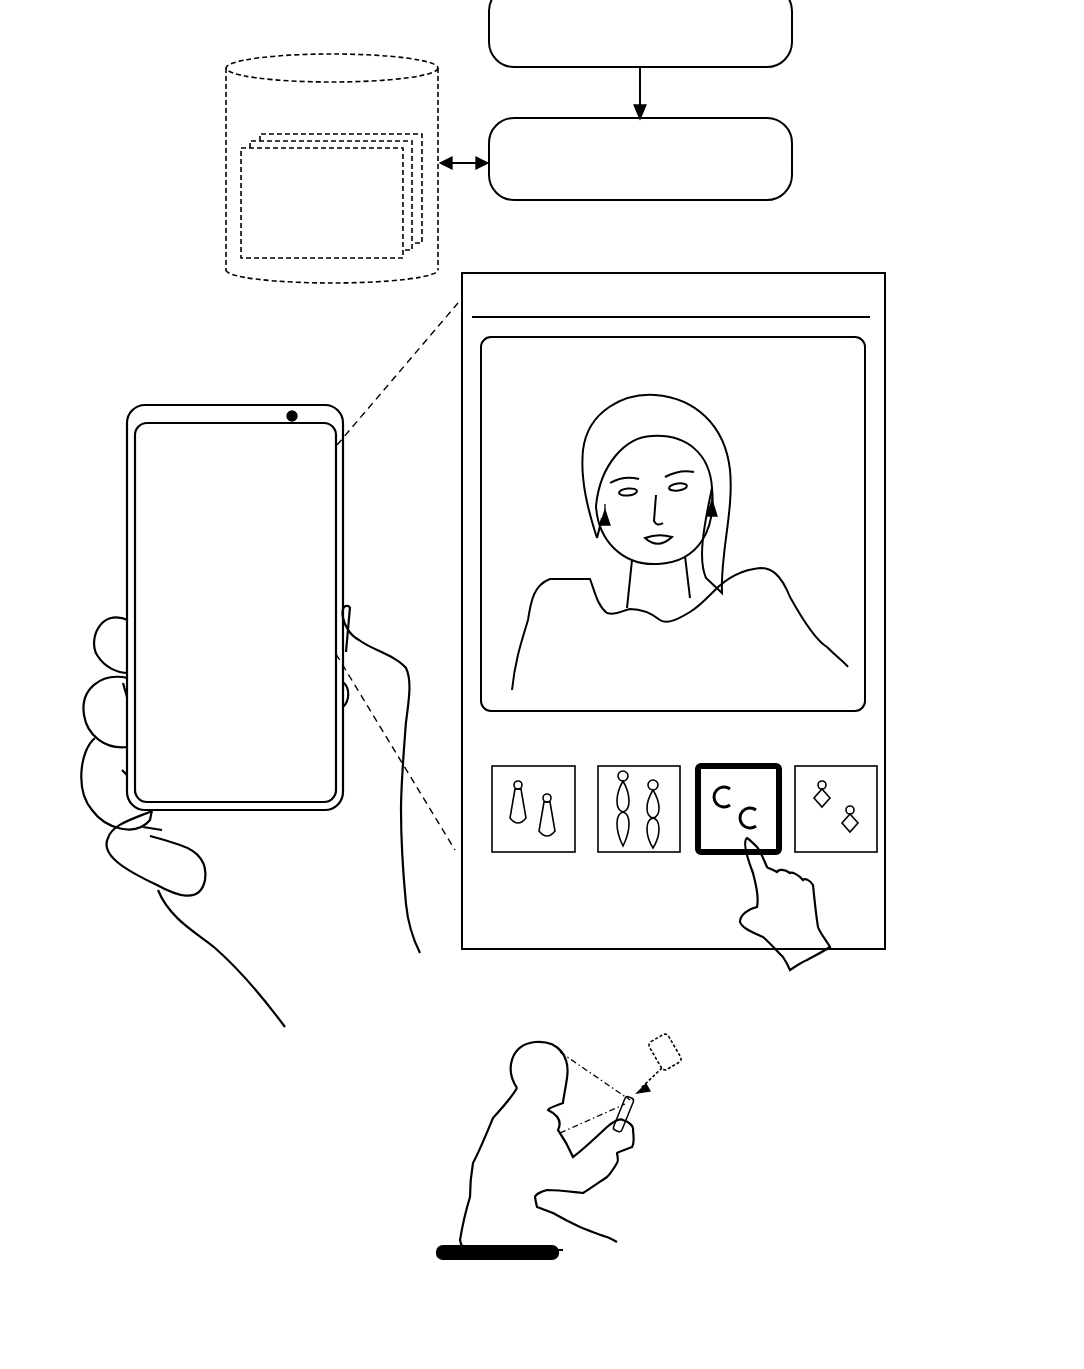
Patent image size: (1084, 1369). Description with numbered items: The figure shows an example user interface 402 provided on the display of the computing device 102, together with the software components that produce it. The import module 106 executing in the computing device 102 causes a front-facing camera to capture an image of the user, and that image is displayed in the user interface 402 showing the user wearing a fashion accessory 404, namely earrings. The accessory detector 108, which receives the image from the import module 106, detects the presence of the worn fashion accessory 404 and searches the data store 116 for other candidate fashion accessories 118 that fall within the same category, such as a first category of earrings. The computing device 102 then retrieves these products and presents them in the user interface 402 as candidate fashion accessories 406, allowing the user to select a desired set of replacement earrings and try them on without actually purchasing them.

The computing device 102 is at (230, 405).
The import module 106 is at (740, 37).
The accessory detector 108 is at (775, 172).
The data store 116 is at (412, 121).
The candidate fashion accessories 118 is at (338, 241).
The user interface 402 is at (850, 232).
The fashion accessory 404 is at (731, 484).
The candidate fashion accessories 406 is at (862, 736).